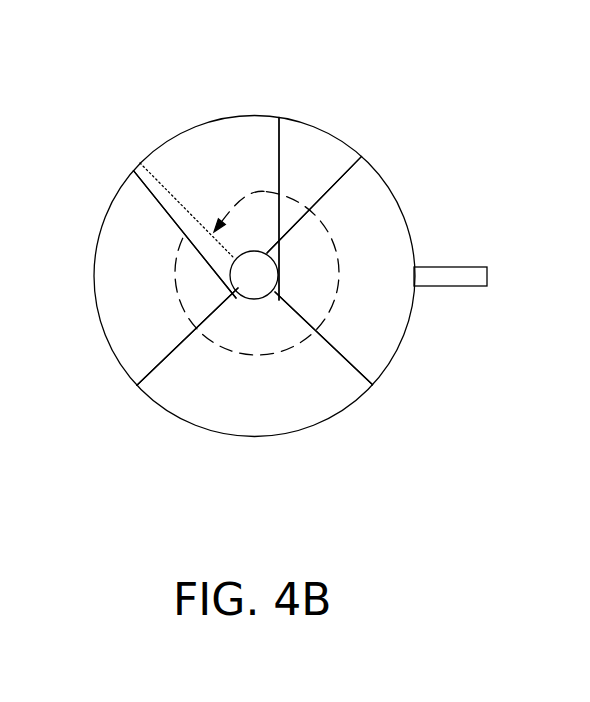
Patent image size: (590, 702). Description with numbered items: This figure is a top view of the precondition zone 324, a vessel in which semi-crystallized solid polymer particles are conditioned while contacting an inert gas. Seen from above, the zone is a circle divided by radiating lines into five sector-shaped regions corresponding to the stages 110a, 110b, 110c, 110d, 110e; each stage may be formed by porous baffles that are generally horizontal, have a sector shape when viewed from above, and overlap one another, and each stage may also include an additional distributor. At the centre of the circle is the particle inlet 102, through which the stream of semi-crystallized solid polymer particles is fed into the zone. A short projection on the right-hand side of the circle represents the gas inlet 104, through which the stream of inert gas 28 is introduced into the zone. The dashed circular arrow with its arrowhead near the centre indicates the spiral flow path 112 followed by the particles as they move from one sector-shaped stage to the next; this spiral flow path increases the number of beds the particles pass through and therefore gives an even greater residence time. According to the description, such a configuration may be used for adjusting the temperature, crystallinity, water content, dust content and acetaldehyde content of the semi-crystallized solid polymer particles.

The precondition zone 324 is at (396, 54).
The spiral flow path 112 is at (200, 212).
The particle inlet 102 is at (267, 250).
The gas inlet 104 is at (414, 268).
The stream of inert gas 28 is at (476, 278).
The stage 110a is at (195, 145).
The stage 110b is at (108, 322).
The stage 110c is at (305, 413).
The stage 110d is at (397, 317).
The stage 110e is at (325, 155).